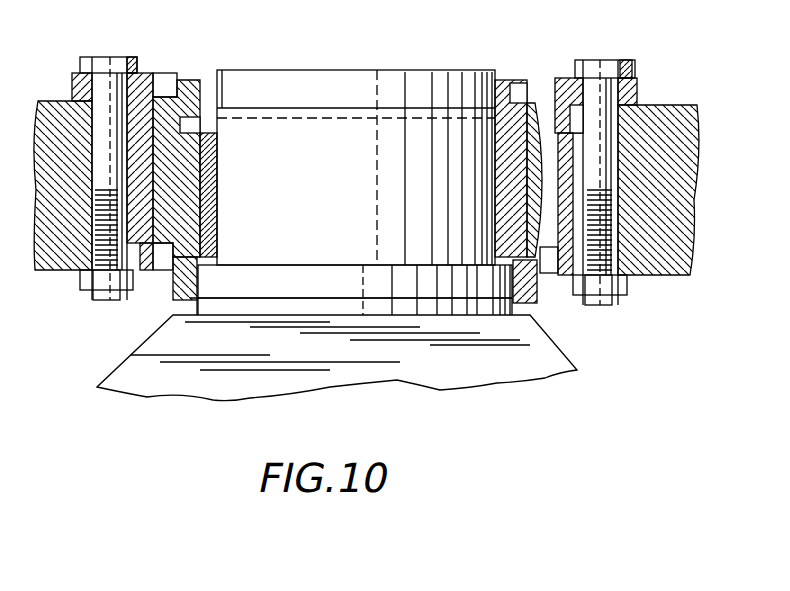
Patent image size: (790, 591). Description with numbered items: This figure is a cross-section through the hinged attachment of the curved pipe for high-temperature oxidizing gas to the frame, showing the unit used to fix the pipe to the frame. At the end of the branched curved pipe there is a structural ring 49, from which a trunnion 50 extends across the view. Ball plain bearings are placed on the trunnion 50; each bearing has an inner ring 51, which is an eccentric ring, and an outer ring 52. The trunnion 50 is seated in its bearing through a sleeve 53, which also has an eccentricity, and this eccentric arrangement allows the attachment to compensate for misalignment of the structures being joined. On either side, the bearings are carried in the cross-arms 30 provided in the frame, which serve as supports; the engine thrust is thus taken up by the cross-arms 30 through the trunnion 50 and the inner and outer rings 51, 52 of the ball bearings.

The cross-arm 30 is at (668, 130).
The structural ring 49 is at (167, 340).
The trunnion 50 is at (307, 133).
The inner ring 51 is at (542, 135).
The outer ring 52 is at (150, 140).
The sleeve 53 is at (213, 150).